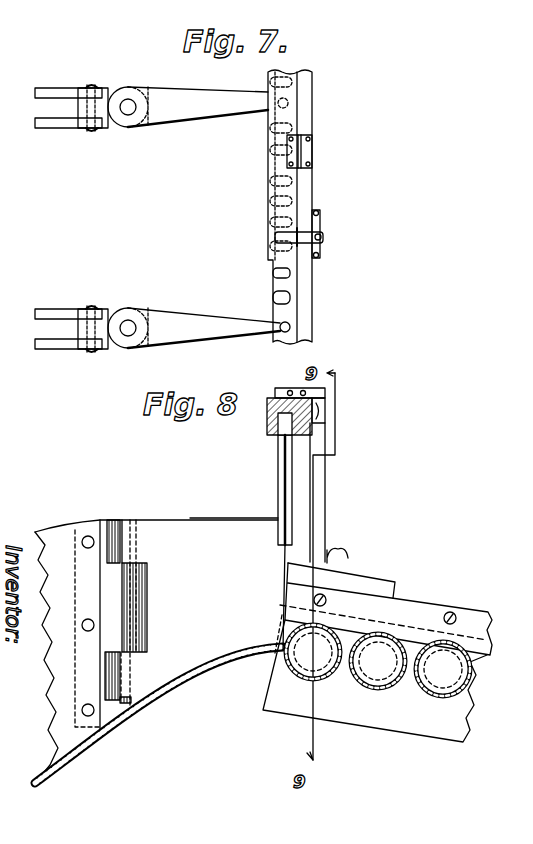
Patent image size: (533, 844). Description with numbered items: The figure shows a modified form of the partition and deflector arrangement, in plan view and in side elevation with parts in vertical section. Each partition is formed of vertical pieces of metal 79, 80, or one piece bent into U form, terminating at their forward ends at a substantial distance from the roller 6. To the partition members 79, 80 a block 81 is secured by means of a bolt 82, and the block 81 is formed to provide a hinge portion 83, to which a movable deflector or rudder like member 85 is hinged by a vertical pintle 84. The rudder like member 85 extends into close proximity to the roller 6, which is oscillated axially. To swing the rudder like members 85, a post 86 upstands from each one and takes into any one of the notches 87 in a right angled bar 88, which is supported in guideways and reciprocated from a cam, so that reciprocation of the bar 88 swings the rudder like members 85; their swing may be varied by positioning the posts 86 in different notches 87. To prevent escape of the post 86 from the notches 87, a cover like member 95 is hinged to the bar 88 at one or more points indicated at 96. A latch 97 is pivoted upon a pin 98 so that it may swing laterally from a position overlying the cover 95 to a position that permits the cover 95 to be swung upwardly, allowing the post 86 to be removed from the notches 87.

In FIG. 8, the roller 6 is at (288, 670).
In FIG. 7, the vertical piece of metal 79 is at (45, 124).
In FIG. 7, the vertical piece of metal 80 is at (52, 80).
In FIG. 7, the block 81 is at (100, 102).
In FIG. 7, the bolt 82 is at (92, 85).
In FIG. 8, the hinge portion 83 is at (140, 563).
In FIG. 7, the vertical pintle 84 is at (128, 107).
In FIG. 8, the vertical pintle 84 is at (120, 522).
In FIG. 7, the rudder like member 85 is at (193, 113).
In FIG. 8, the rudder like member 85 is at (232, 525).
In FIG. 7, the post 86 is at (295, 102).
In FIG. 8, the post 86 is at (283, 458).
In FIG. 7, the notch 87 is at (290, 302).
In FIG. 8, the right angled bar 88 is at (320, 428).
In FIG. 8, the cover like member 95 is at (270, 403).
In FIG. 7, the hinge 96 is at (313, 152).
In FIG. 7, the latch 97 is at (297, 235).
In FIG. 7, the pin 98 is at (323, 237).